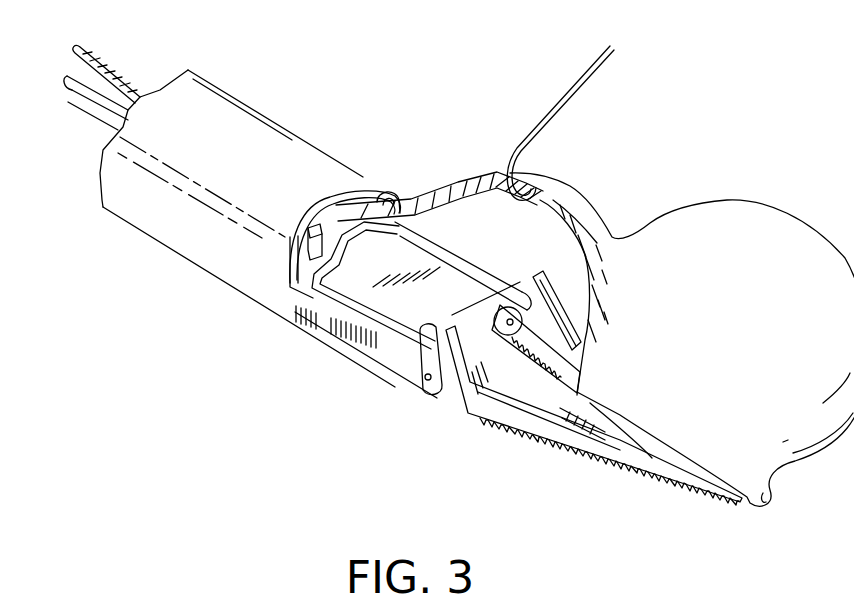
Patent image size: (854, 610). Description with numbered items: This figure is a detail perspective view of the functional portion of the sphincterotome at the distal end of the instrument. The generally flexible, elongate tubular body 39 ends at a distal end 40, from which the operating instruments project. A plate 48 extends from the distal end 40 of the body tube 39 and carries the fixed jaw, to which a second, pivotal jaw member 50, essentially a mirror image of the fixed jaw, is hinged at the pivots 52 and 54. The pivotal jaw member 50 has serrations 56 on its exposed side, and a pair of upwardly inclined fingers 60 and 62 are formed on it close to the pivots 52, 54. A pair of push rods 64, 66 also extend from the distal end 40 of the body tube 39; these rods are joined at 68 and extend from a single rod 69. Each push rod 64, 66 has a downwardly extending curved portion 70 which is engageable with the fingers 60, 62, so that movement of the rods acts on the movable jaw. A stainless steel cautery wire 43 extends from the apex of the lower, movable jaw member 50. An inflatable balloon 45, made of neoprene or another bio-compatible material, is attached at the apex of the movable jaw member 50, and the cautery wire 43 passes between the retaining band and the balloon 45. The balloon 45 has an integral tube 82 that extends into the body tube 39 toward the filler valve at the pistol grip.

The tubular body 39 is at (280, 140).
The distal end 40 is at (373, 187).
The cautery wire 43 is at (85, 115).
The inflatable balloon 45 is at (753, 368).
The plate 48 is at (445, 315).
The pivotal jaw member 50 is at (518, 420).
The pivot 52 is at (425, 394).
The pivot 54 is at (510, 326).
The serrations 56 is at (575, 455).
The finger 60 is at (397, 337).
The finger 62 is at (524, 278).
The push rod 64 is at (347, 293).
The push rod 66 is at (420, 237).
The rod junction 68 is at (300, 240).
The rod 69 is at (80, 72).
The curved portion 70 is at (424, 378).
The integral tube 82 is at (113, 66).